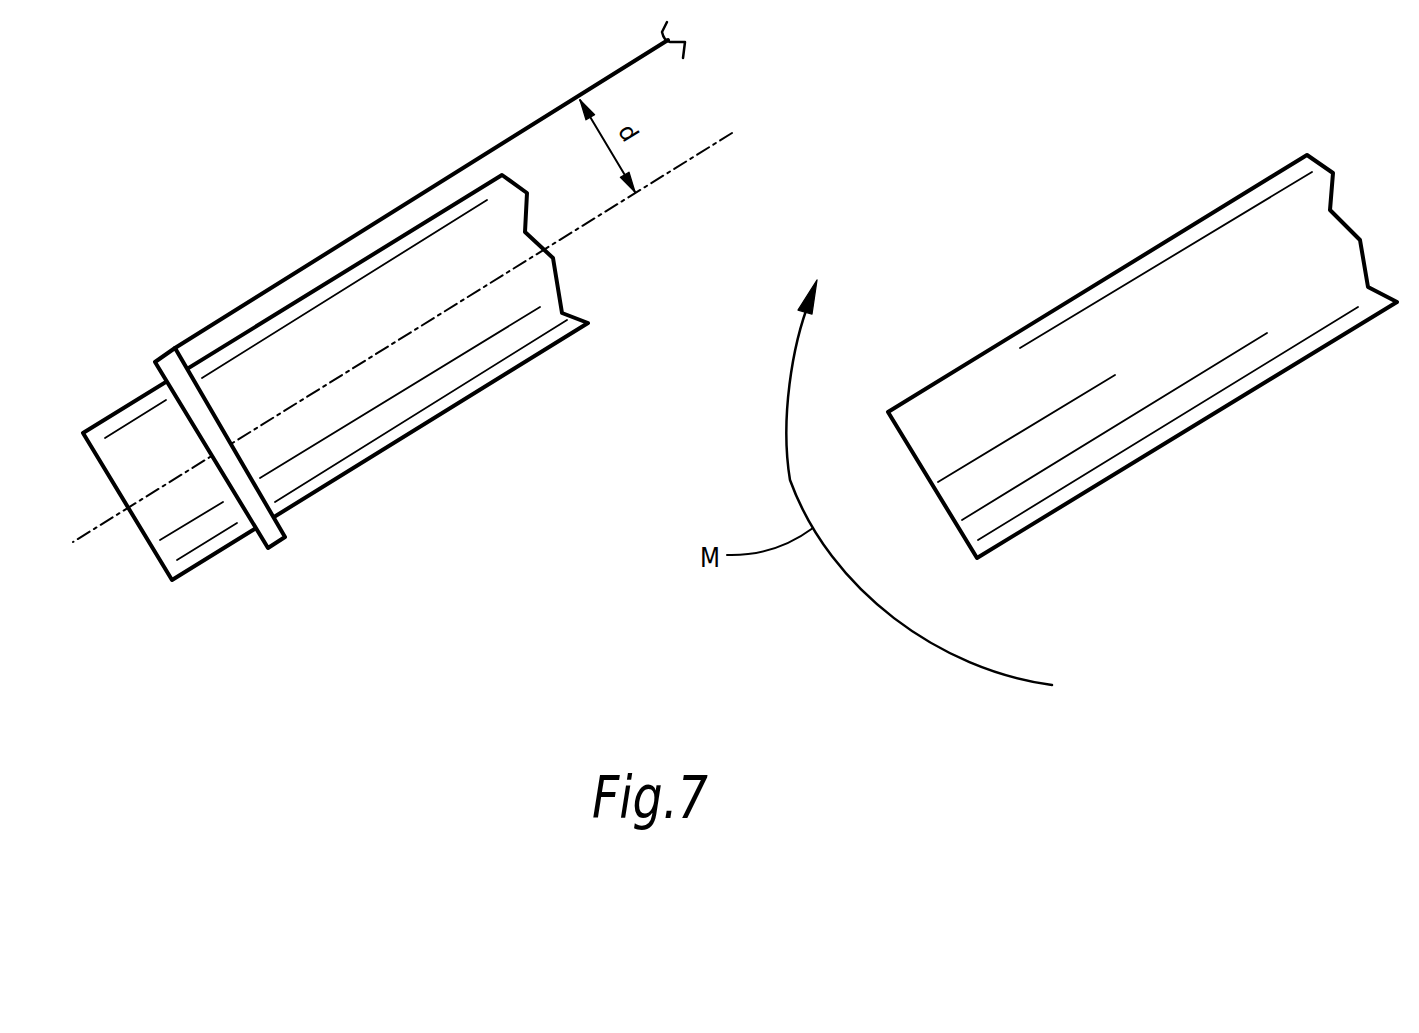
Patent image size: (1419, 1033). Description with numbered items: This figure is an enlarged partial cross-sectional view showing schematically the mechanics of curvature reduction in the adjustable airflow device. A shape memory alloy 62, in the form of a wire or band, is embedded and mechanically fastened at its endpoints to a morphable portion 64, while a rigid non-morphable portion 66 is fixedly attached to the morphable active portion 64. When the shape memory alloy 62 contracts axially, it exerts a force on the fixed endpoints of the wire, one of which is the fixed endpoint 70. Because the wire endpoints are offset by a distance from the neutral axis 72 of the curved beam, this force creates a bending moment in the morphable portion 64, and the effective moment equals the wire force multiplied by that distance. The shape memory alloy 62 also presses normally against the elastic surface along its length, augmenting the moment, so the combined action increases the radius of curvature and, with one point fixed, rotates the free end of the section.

The shape memory alloy 62 is at (360, 232).
The morphable portion 64 is at (407, 432).
The rigid non-morphable portion 66 is at (1205, 422).
The fixed endpoint 70 is at (278, 538).
The neutral axis 72 is at (93, 530).